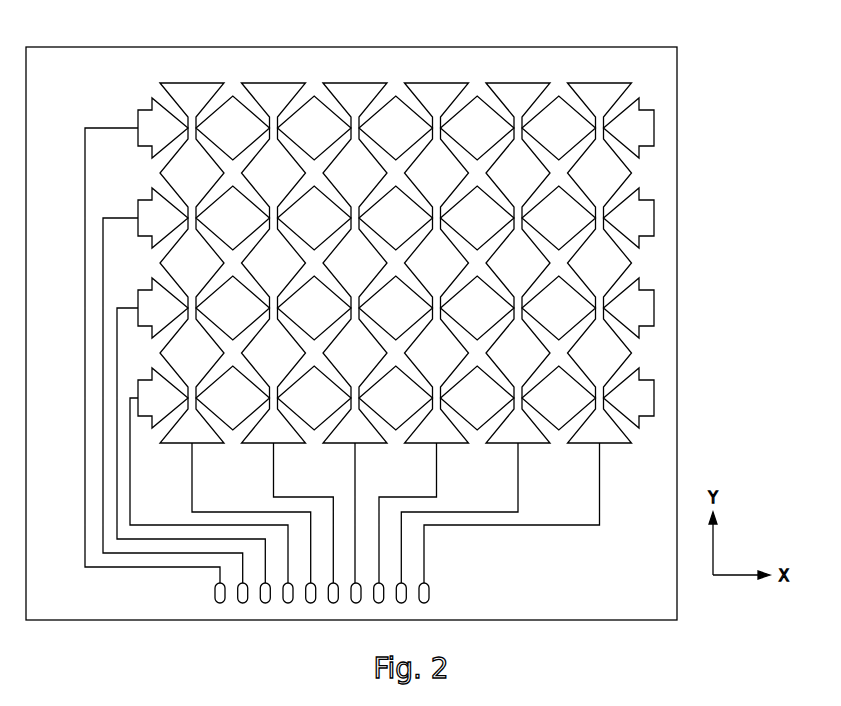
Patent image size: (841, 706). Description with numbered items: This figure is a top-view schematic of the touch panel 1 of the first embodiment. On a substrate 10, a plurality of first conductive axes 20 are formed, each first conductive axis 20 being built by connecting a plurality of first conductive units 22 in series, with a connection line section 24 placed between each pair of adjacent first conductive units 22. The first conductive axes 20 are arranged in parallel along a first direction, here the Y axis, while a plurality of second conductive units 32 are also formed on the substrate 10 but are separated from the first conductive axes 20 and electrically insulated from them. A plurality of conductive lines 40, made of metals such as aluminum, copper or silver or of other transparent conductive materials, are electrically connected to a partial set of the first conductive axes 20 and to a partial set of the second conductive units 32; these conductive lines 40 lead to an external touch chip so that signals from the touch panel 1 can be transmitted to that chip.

The touch panel 1 is at (741, 111).
The substrate 10 is at (628, 607).
The first conductive axes 20 is at (742, 330).
The first conductive units 22 is at (607, 352).
The connection line sections 24 is at (612, 397).
The second conductive units 32 is at (317, 117).
The conductive lines 40 is at (604, 487).